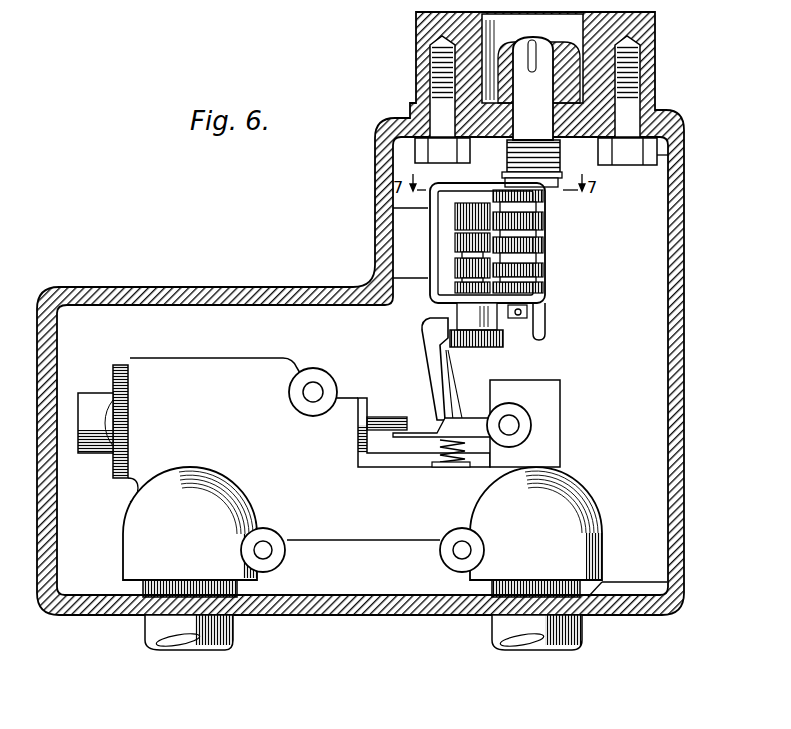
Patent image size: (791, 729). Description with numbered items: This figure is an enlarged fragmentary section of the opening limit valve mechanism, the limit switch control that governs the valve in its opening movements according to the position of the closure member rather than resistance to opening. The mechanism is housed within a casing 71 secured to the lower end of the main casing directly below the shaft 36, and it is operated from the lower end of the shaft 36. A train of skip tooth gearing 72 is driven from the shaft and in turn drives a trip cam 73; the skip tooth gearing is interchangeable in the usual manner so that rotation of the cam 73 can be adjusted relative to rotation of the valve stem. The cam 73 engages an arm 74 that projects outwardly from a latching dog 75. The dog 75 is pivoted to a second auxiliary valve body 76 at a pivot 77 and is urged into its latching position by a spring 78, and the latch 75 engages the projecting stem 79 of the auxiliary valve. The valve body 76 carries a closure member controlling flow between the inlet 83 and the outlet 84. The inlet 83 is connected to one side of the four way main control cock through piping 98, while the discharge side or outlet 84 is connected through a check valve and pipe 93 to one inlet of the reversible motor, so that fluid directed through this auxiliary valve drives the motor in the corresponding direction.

The shaft 36 is at (532, 112).
The casing 71 is at (684, 300).
The train of skip tooth gearing 72 is at (545, 250).
The trip cam 73 is at (503, 345).
The arm 74 is at (428, 338).
The latching dog 75 is at (418, 438).
The second auxiliary valve body 76 is at (270, 370).
The pivot 77 is at (512, 425).
The spring 78 is at (478, 459).
The projecting stem 79 is at (380, 417).
The inlet 83 is at (281, 532).
The outlet 84 is at (521, 532).
The pipe 93 is at (582, 640).
The piping 98 is at (178, 648).